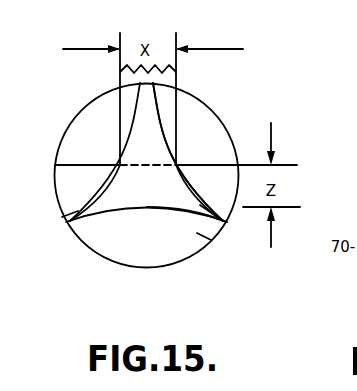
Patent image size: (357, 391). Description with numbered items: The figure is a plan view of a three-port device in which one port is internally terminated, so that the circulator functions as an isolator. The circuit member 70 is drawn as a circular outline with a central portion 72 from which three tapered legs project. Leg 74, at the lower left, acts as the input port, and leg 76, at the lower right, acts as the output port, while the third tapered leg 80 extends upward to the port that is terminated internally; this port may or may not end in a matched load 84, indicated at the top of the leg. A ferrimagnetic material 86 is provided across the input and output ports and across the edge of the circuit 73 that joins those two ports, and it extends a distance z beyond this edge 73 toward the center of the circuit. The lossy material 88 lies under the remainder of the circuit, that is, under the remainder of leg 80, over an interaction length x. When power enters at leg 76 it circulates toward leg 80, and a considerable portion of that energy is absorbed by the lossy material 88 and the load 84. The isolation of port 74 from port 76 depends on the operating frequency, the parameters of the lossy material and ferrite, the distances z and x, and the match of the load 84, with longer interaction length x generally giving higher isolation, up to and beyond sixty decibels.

The circuit member 70 is at (115, 243).
The central portion 72 is at (138, 193).
The edge of the circuit 73 is at (173, 210).
The tapered leg 74 is at (67, 221).
The tapered leg 76 is at (222, 223).
The tapered leg 80 is at (142, 121).
The matched load 84 is at (162, 70).
The ferrimagnetic material 86 is at (203, 235).
The lossy material 88 is at (200, 132).